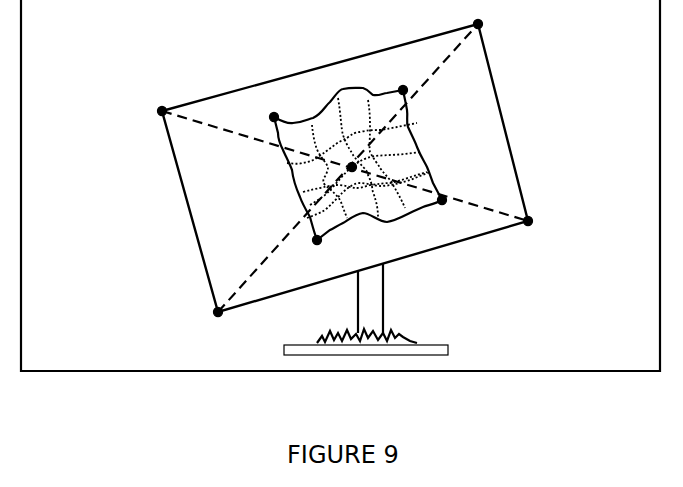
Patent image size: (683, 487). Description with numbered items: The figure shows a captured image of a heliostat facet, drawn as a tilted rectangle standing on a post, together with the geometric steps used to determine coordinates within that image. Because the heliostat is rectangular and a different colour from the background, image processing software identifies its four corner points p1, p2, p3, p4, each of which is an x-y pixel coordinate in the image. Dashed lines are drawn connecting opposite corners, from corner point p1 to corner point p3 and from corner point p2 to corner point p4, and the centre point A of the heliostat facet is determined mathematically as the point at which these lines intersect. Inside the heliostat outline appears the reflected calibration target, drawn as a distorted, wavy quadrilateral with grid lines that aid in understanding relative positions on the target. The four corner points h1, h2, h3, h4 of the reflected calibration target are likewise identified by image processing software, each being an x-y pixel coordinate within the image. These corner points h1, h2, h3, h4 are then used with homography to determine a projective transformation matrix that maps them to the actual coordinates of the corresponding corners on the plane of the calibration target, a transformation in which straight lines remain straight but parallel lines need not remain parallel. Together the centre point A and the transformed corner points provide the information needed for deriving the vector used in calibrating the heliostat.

The first corner point of the heliostat image p1 is at (147, 105).
The second corner point of the heliostat image p2 is at (206, 322).
The third corner point of the heliostat image p3 is at (543, 230).
The fourth corner point of the heliostat image p4 is at (493, 19).
The first corner point of the reflected calibration target h1 is at (260, 109).
The second corner point of the reflected calibration target h2 is at (306, 249).
The third corner point of the reflected calibration target h3 is at (457, 209).
The fourth corner point of the reflected calibration target h4 is at (413, 78).
The centre point of the heliostat facet A is at (350, 158).